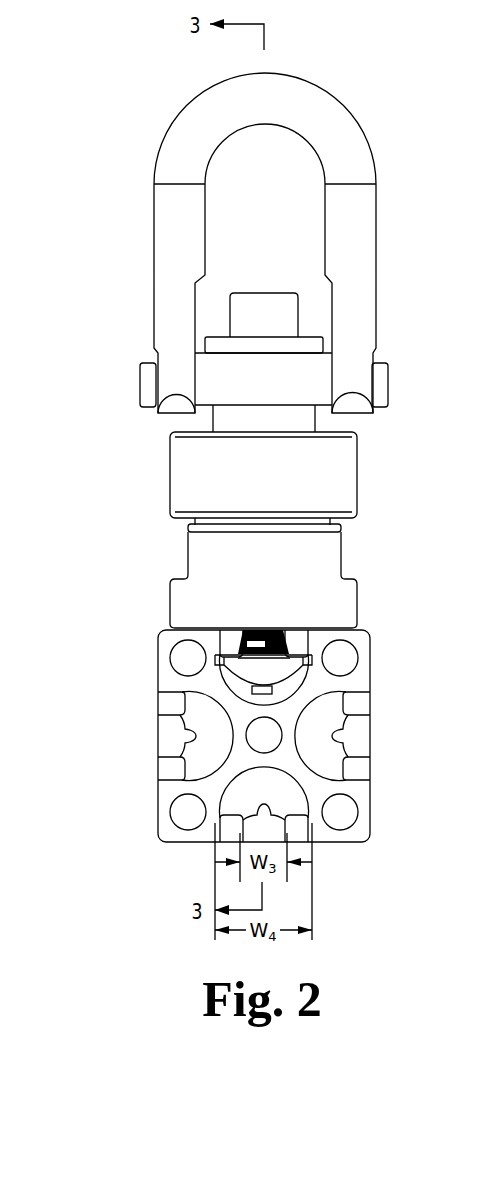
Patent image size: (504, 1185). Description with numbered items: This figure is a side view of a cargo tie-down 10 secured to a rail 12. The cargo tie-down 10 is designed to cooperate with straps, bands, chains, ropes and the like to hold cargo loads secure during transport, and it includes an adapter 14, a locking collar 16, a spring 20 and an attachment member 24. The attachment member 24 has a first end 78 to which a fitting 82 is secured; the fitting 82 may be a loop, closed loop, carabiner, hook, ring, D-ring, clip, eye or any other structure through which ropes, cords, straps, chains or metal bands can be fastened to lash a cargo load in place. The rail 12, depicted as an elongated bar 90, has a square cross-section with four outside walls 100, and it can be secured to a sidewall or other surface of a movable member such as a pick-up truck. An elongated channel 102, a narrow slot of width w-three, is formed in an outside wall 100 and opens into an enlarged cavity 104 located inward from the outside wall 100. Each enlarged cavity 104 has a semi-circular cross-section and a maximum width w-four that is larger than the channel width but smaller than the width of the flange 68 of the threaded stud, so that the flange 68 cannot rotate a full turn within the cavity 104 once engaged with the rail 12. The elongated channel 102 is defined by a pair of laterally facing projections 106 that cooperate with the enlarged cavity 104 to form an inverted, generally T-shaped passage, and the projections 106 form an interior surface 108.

The cargo tie-down 10 is at (441, 151).
The rail 12 is at (396, 632).
The adapter 14 is at (251, 491).
The locking collar 16 is at (251, 584).
The spring 20 is at (279, 630).
The attachment member 24 is at (340, 332).
The flange 68 is at (317, 666).
The first end 78 is at (283, 292).
The fitting 82 is at (337, 100).
The elongated bar 90 is at (362, 843).
The outside wall 100 is at (362, 625).
The elongated channel 102 is at (386, 756).
The enlarged cavity 104 is at (331, 755).
The laterally facing projections 106 is at (357, 705).
The interior surface 108 is at (196, 730).